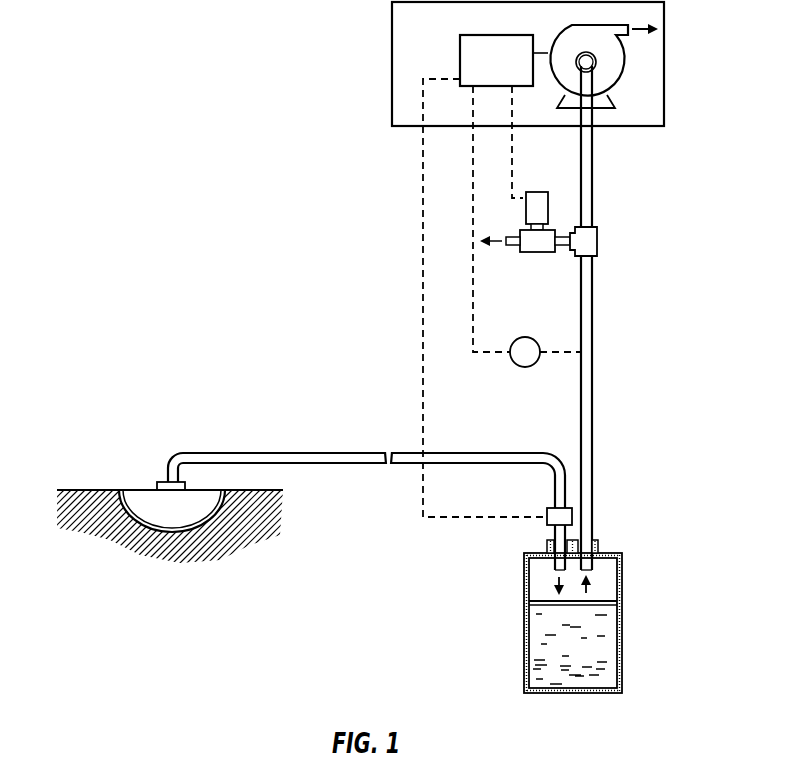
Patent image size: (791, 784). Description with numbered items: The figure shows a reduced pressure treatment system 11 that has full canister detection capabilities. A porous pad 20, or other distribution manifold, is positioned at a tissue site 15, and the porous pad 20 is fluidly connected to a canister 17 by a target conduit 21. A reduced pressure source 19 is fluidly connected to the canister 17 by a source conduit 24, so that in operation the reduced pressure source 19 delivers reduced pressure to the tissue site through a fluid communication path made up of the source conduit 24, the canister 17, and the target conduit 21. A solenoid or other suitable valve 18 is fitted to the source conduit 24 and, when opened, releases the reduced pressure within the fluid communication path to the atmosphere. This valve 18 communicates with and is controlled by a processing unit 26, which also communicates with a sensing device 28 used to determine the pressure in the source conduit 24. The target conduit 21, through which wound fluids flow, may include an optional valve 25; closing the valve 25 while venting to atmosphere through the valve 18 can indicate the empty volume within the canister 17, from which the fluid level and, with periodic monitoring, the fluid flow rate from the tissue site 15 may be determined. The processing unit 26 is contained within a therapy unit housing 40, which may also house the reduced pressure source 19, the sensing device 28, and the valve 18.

The reduced pressure treatment system 11 is at (338, 42).
The tissue site 15 is at (147, 527).
The canister 17 is at (630, 592).
The valve 18 is at (538, 252).
The reduced pressure source 19 is at (612, 62).
The porous pad 20 is at (198, 513).
The target conduit 21 is at (372, 461).
The source conduit 24 is at (593, 370).
The valve 25 is at (549, 508).
The processing unit 26 is at (460, 44).
The sensing device 28 is at (525, 368).
The therapy unit housing 40 is at (664, 98).